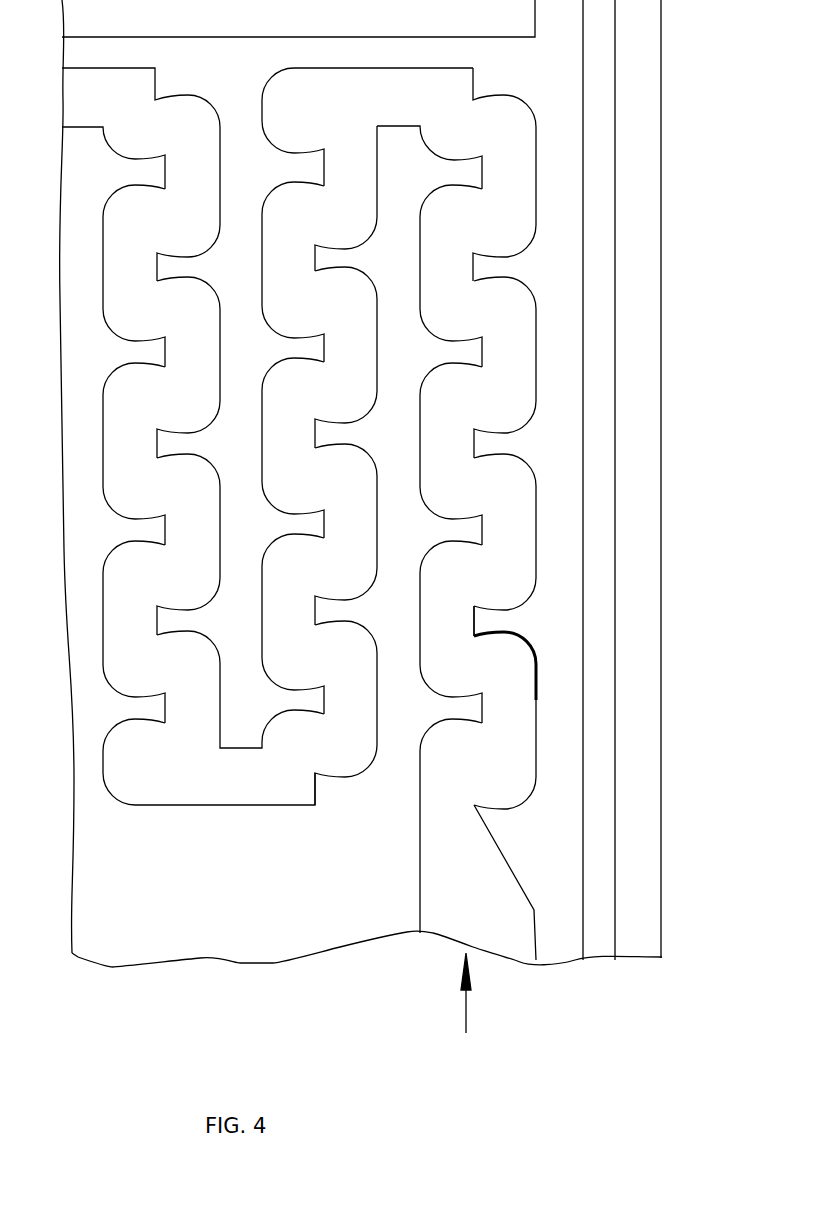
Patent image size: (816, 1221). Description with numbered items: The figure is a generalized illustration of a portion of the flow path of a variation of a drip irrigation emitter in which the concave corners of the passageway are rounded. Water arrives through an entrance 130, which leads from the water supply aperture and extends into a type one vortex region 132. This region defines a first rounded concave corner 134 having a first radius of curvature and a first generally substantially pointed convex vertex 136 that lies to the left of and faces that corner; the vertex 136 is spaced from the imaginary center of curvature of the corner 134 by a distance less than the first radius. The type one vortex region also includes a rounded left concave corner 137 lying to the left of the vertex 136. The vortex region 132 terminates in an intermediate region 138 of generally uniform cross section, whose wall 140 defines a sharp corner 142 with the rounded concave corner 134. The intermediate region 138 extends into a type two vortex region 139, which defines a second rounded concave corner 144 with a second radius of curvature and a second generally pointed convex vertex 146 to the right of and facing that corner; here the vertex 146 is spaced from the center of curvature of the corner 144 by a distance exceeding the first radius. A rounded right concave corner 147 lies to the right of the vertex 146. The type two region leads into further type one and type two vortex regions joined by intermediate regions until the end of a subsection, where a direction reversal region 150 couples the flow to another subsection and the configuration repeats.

The entrance 130 is at (470, 886).
The type one vortex region 132 is at (465, 328).
The first rounded concave corner 134 is at (506, 634).
The first generally substantially pointed convex vertex 136 is at (536, 732).
The left concave corner 137 is at (436, 690).
The intermediate region 138 is at (436, 602).
The type two vortex region 139 is at (458, 222).
The wall 140 is at (474, 635).
The sharp corner 142 is at (474, 608).
The second rounded concave corner 144 is at (443, 567).
The second generally pointed convex vertex 146 is at (474, 608).
The right concave corner 147 is at (523, 602).
The direction reversal region 150 is at (402, 97).